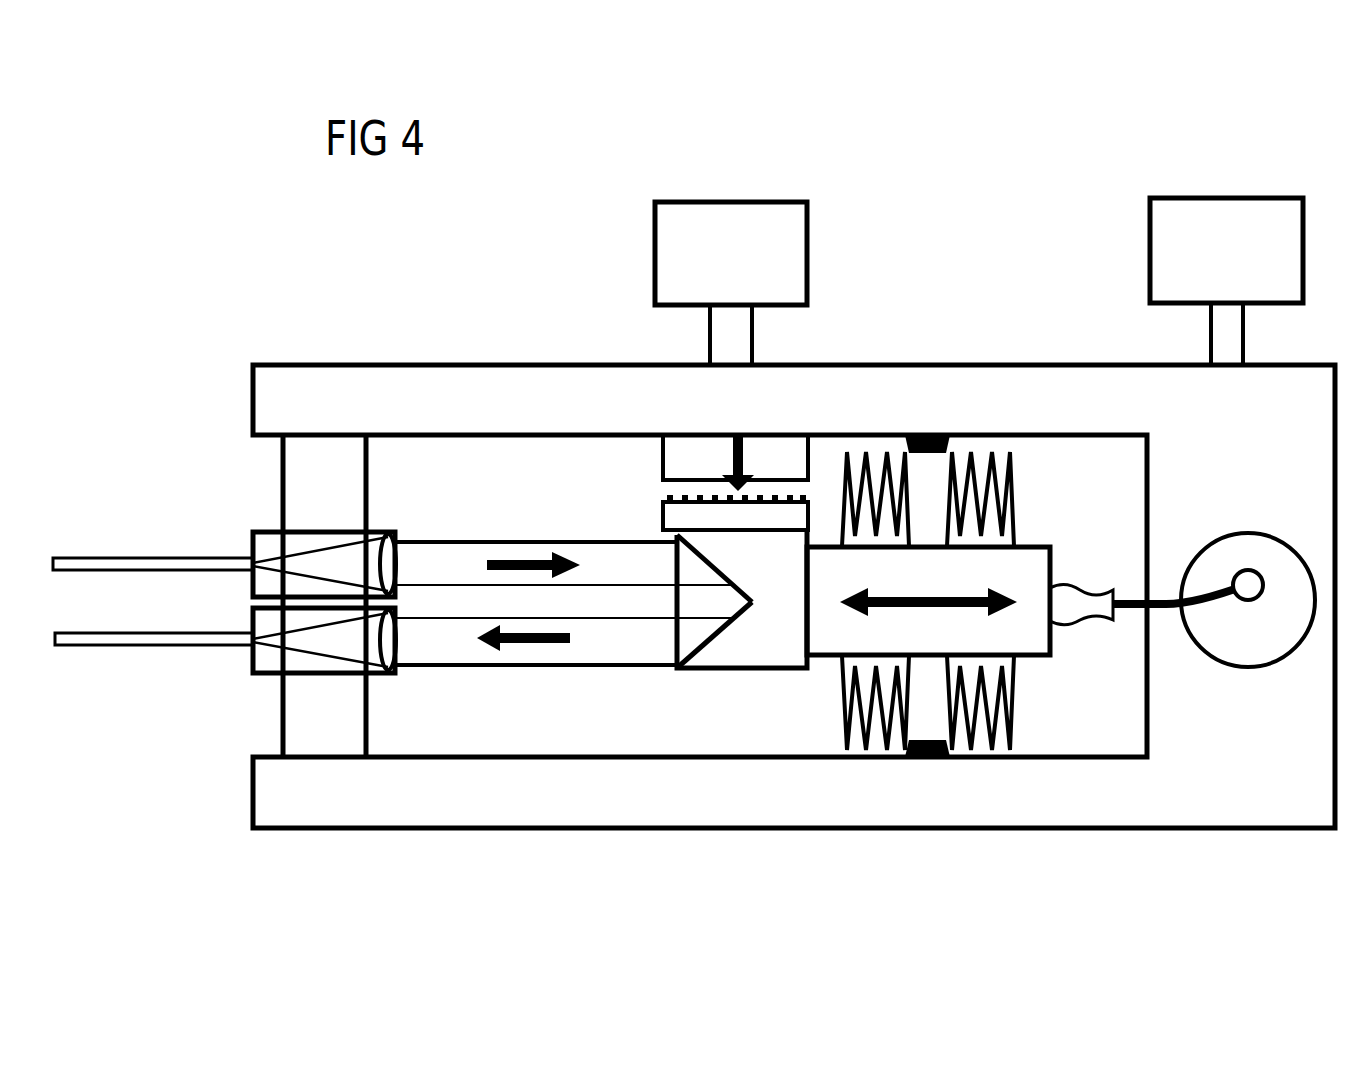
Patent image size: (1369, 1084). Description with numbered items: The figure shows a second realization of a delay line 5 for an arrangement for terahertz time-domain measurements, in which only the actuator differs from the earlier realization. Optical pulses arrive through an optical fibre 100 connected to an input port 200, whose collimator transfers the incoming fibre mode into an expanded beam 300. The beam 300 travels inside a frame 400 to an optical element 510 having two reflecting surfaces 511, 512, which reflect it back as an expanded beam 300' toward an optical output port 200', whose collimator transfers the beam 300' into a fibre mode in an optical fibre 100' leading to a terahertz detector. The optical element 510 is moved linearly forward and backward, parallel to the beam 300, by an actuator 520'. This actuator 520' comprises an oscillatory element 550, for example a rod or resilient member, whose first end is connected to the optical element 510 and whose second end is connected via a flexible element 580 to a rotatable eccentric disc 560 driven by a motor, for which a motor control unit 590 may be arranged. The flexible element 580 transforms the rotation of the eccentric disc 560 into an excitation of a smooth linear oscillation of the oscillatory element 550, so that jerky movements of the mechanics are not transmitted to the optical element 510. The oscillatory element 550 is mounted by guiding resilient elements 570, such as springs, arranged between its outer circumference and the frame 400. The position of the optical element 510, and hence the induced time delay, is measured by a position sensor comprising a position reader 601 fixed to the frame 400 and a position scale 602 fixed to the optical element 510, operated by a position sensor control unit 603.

The delay line 5 is at (462, 295).
The optical fibre 100 is at (153, 535).
The optical fibre 100' is at (154, 675).
The input port 200 is at (290, 548).
The optical output port 200' is at (305, 672).
The expanded beam 300 is at (564, 538).
The expanded beam 300' is at (564, 671).
The frame 400 is at (303, 463).
The optical element 510 is at (742, 627).
The reflecting surface 511 is at (720, 567).
The reflecting surface 512 is at (735, 635).
The actuator 520' is at (1061, 628).
The oscillatory element 550 is at (1008, 632).
The eccentric disc 560 is at (1260, 630).
The guiding resilient elements 570 is at (1013, 523).
The flexible element 580 is at (1163, 598).
The motor control unit 590 is at (1168, 243).
The position reader 601 is at (680, 457).
The position scale 602 is at (680, 515).
The position sensor control unit 603 is at (672, 258).